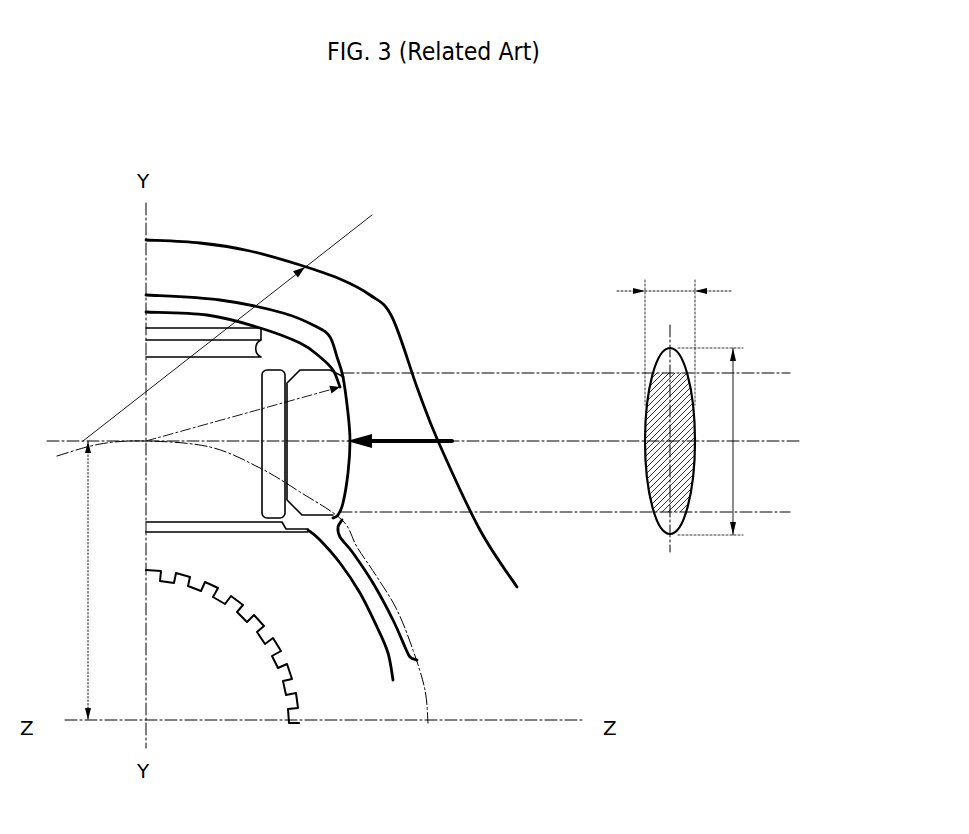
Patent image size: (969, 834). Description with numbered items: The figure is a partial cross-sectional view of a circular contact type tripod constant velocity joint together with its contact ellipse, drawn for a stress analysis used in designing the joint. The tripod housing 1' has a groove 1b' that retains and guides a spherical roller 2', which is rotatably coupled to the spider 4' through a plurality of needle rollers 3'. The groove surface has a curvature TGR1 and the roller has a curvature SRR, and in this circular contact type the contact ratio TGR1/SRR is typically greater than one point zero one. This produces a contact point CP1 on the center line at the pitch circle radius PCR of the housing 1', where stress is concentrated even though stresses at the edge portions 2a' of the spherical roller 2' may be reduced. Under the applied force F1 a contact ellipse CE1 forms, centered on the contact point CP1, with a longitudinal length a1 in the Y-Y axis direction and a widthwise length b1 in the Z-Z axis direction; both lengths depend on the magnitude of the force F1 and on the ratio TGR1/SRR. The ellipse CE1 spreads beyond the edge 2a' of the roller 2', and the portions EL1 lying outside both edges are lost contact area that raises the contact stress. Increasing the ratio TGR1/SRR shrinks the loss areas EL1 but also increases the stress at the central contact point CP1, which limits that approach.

The tripod housing 1' is at (331, 411).
The groove 1b' is at (309, 326).
The spherical roller 2' is at (381, 412).
The edge portion of spherical roller 2a' is at (415, 439).
The needle rollers 3' is at (266, 349).
The spider 4' is at (227, 353).
The curvature of groove surface TGR1 is at (227, 320).
The curvature of spherical roller SRR is at (243, 413).
The applied force F1 is at (399, 432).
The pitch circle radius PCR is at (75, 580).
The loss areas of contact ellipse EL1 is at (683, 527).
The contact ellipse CE1 is at (655, 425).
The contact point CP1 is at (363, 437).
The longitudinal length of contact ellipse a1 is at (710, 441).
The widthwise length of contact ellipse b1 is at (675, 335).